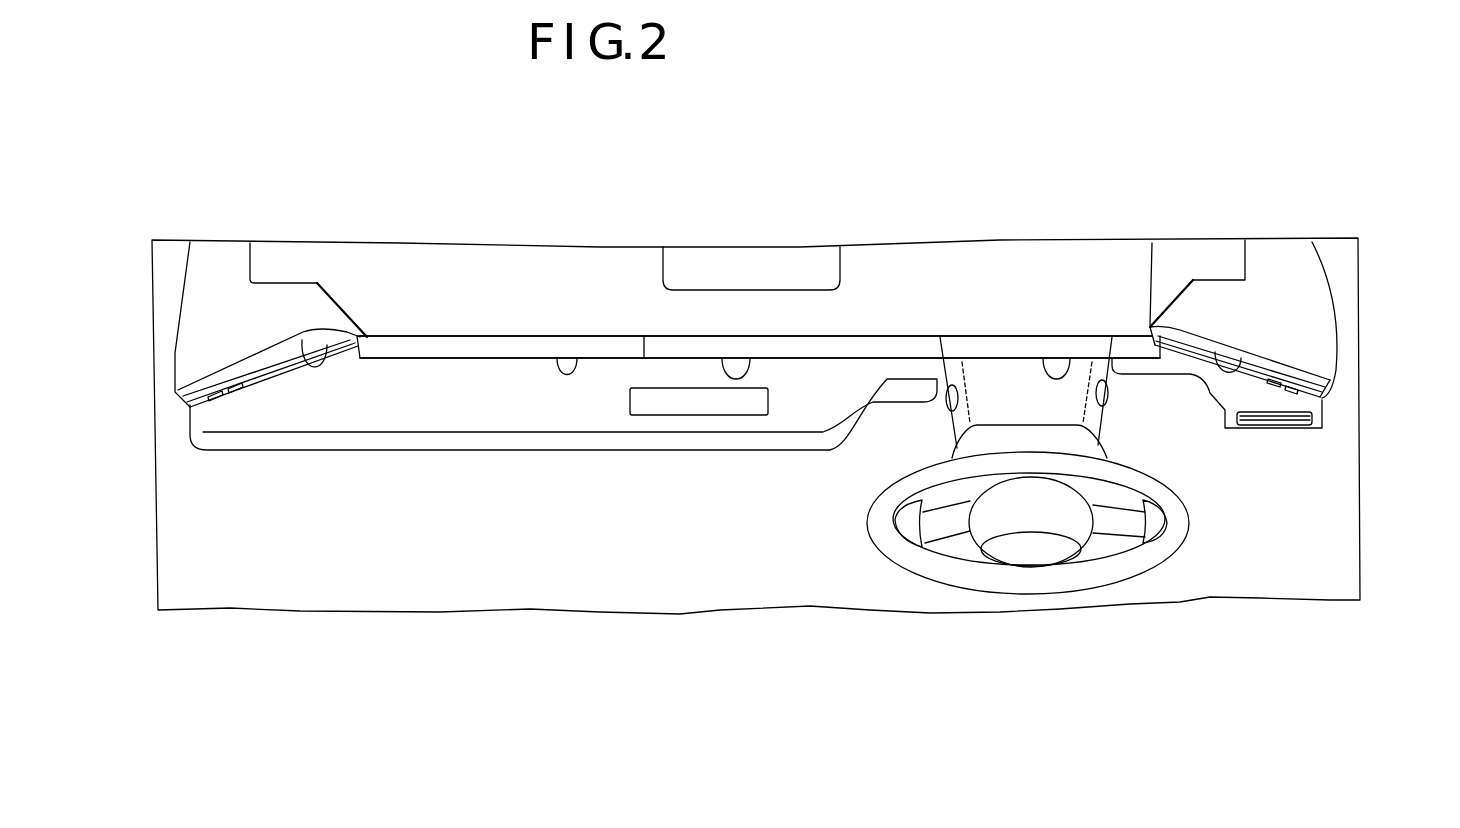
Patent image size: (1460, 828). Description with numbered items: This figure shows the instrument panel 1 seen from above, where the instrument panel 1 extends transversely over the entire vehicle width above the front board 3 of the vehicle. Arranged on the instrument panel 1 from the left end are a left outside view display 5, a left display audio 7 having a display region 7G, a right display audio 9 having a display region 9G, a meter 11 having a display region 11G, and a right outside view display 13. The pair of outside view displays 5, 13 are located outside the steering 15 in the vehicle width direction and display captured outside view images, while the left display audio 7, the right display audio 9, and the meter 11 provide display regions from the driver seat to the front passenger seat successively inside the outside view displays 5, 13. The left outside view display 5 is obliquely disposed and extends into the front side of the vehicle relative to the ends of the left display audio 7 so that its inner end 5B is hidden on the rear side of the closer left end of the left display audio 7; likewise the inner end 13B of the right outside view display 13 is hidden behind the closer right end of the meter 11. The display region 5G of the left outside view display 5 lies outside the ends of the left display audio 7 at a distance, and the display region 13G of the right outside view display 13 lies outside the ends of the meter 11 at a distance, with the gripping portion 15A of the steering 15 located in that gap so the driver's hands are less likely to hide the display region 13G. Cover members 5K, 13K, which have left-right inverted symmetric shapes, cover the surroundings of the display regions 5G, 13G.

The instrument panel 1 is at (798, 328).
The front board 3 is at (480, 412).
The left outside view display 5 is at (240, 333).
The display region 5G is at (316, 355).
The inner end 5B is at (343, 322).
The cover member 5K is at (207, 343).
The left display audio 7 is at (493, 348).
The display region 7G is at (576, 365).
The right display audio 9 is at (876, 350).
The display region 9G is at (722, 368).
The meter 11 is at (1008, 350).
The display region 11G is at (1064, 372).
The right outside view display 13 is at (1240, 330).
The inner end 13B is at (1150, 320).
The display region 13G is at (1228, 368).
The cover member 13K is at (1312, 343).
The steering 15 is at (1025, 582).
The gripping portion 15A is at (1175, 527).